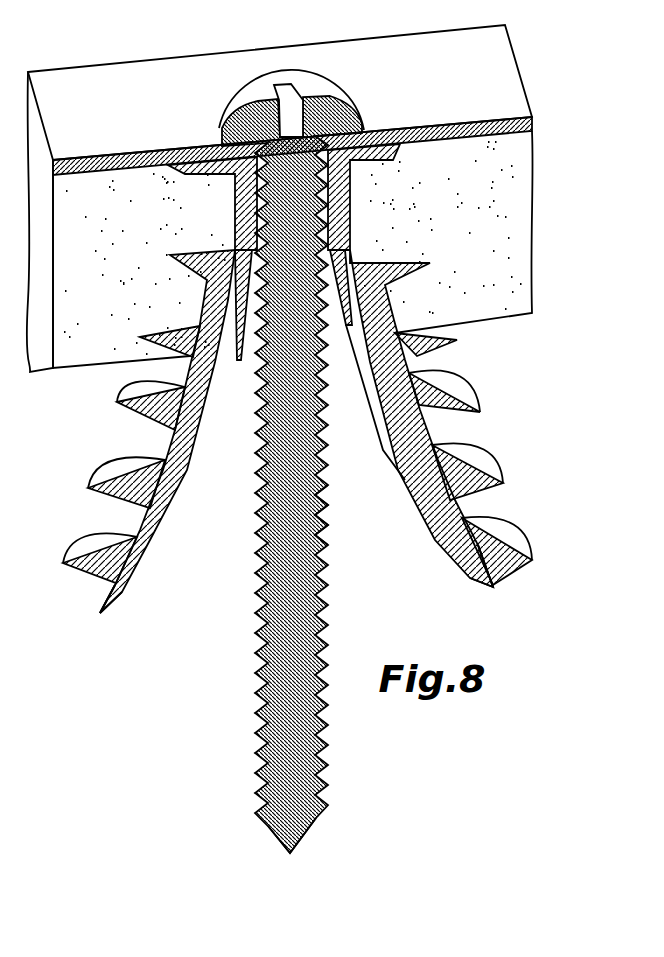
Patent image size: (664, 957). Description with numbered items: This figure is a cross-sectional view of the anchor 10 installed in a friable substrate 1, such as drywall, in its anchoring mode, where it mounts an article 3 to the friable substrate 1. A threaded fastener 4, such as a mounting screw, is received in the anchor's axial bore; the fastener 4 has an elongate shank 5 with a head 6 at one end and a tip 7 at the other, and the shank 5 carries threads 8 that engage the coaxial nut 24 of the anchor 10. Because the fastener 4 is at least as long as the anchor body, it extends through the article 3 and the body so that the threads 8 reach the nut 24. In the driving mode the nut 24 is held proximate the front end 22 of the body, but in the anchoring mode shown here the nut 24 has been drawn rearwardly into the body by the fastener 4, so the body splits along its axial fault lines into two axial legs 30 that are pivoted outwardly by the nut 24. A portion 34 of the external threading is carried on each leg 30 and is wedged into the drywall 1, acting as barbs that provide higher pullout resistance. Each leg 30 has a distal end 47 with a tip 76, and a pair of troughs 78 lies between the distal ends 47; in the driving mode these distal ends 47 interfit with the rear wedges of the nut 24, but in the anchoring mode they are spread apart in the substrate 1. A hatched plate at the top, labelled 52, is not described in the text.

The friable substrate 1 is at (533, 233).
The article 3 is at (533, 155).
The threaded fastener 4 is at (264, 466).
The shank 5 is at (329, 607).
The head 6 is at (236, 100).
The tip 7 is at (290, 855).
The threads 8 is at (330, 518).
The anchor 10 is at (341, 408).
The front end 22 is at (530, 573).
The coaxial nut 24 is at (239, 355).
The axial legs 30 is at (440, 452).
The portion of threading 34 is at (445, 355).
The distal end 47 is at (120, 588).
The anchor head flange / plate 52 is at (200, 147).
The tip 76 is at (100, 615).
The troughs 78 is at (406, 483).